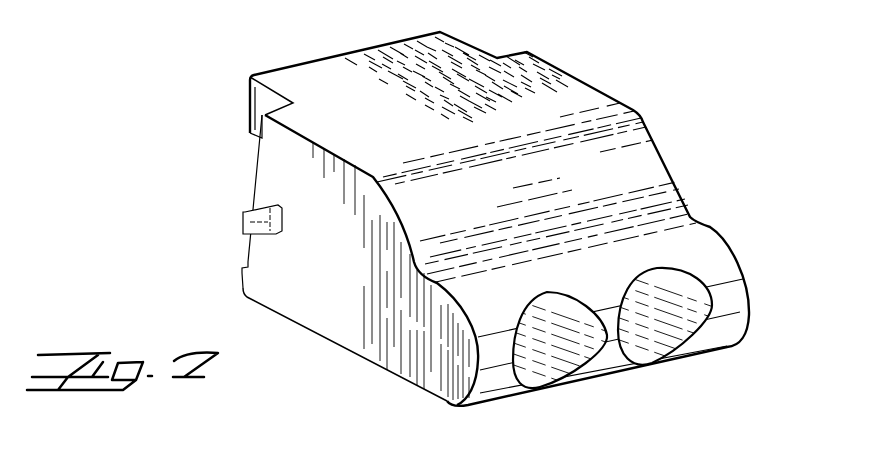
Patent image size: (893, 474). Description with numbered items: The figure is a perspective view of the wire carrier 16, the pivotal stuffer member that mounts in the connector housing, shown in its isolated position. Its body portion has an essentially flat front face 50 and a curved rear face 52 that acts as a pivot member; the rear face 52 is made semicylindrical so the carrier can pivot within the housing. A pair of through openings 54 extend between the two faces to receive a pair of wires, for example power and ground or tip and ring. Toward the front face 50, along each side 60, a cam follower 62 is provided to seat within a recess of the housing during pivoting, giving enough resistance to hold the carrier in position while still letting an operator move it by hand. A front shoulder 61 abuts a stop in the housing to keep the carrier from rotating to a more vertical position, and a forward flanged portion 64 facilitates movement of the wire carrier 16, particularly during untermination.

The wire carrier 16 is at (486, 227).
The front face 50 is at (258, 160).
The rear face 52 is at (718, 247).
The through openings 54 is at (650, 342).
The side 60 is at (315, 303).
The front shoulder 61 is at (248, 265).
The cam follower 62 is at (250, 223).
The forward flanged portion 64 is at (327, 72).